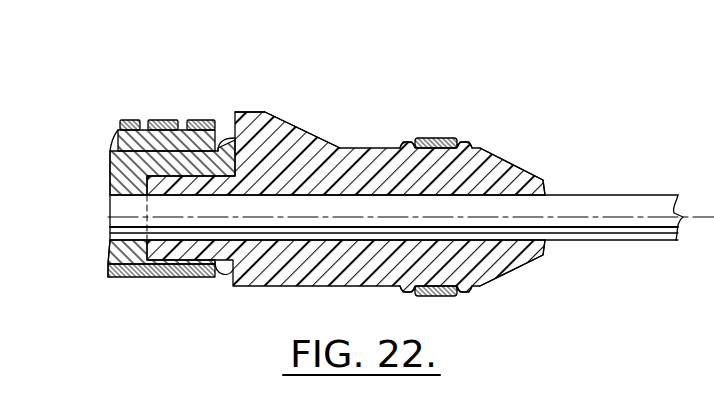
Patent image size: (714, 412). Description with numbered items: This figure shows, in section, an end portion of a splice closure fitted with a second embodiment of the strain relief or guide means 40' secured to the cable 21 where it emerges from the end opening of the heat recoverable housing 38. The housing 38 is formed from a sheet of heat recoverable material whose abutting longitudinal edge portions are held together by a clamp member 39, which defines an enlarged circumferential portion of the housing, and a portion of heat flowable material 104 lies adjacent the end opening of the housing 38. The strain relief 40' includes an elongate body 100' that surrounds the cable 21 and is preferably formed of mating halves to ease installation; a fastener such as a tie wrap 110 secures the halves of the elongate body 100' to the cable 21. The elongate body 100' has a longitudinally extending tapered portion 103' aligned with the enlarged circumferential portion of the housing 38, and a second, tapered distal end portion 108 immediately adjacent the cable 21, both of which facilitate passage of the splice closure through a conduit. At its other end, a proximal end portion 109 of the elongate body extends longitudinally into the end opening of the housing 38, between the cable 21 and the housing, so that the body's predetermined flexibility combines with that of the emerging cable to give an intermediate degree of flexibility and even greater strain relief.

The strain relief or guide means 40' is at (370, 168).
The elongate body 100' is at (346, 185).
The tapered portion 103' is at (287, 105).
The tapered distal end portion 108 is at (507, 172).
The tie wrap 110 is at (441, 137).
The heat flowable material 104 is at (110, 163).
The heat recoverable housing 38 is at (117, 137).
The clamp member 39 is at (162, 121).
The proximal end portion 109 is at (176, 264).
The cable 21 is at (593, 228).